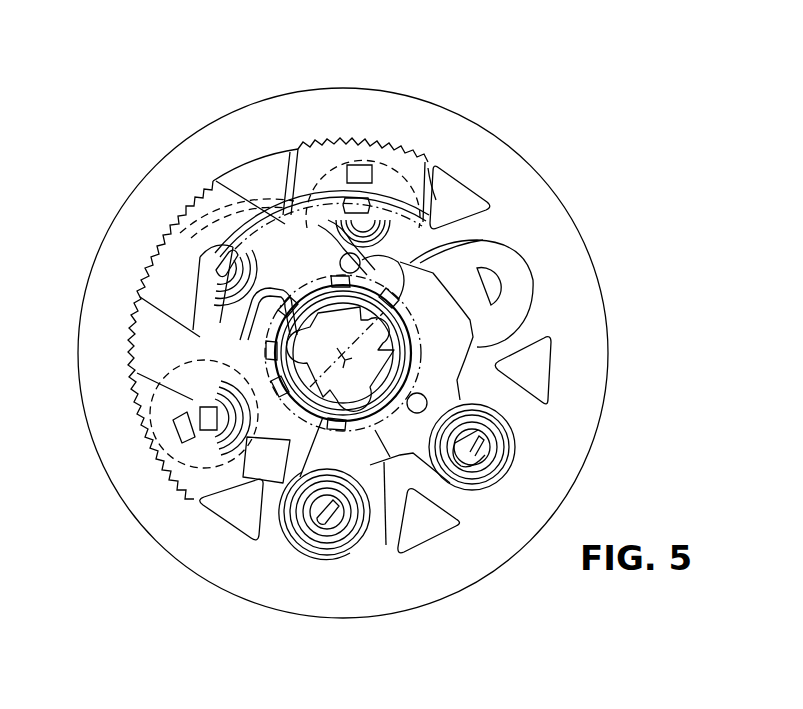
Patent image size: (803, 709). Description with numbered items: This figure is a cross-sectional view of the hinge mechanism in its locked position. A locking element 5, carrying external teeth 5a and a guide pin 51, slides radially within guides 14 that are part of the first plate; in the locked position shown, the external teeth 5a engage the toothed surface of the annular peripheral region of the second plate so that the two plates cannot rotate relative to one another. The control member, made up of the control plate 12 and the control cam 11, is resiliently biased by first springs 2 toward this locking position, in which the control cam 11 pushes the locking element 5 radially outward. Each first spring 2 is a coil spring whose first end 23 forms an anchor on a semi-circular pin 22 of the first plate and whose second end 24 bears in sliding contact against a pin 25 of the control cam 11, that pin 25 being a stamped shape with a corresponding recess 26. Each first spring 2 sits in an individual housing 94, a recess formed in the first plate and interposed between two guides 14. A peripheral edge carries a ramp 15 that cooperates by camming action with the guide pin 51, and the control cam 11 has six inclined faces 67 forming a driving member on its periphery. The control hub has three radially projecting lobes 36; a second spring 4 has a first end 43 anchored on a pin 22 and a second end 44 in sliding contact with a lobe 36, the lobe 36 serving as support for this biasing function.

The first spring 2 is at (510, 440).
The second spring 4 is at (252, 268).
The locking element 5 is at (417, 162).
The external teeth 5a is at (394, 141).
The control cam 11 is at (477, 323).
The control plate 12 is at (273, 207).
The guides 14 is at (427, 183).
The ramp 15 is at (203, 290).
The pin 22 is at (495, 483).
The first end 23 is at (452, 487).
The second end 24 is at (395, 265).
The pin 25 is at (347, 257).
The recess 26 is at (425, 400).
The lobe 36 is at (298, 327).
The first end 43 is at (292, 530).
The second end 44 is at (270, 443).
The guide pin 51 is at (226, 262).
The inclined face 67 is at (463, 313).
The housing 94 is at (518, 257).